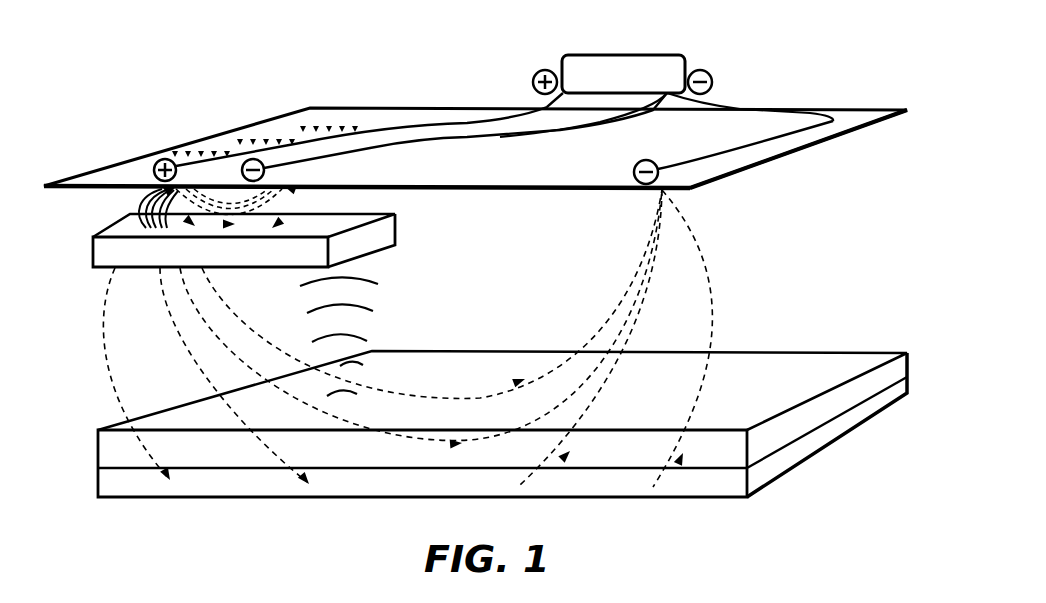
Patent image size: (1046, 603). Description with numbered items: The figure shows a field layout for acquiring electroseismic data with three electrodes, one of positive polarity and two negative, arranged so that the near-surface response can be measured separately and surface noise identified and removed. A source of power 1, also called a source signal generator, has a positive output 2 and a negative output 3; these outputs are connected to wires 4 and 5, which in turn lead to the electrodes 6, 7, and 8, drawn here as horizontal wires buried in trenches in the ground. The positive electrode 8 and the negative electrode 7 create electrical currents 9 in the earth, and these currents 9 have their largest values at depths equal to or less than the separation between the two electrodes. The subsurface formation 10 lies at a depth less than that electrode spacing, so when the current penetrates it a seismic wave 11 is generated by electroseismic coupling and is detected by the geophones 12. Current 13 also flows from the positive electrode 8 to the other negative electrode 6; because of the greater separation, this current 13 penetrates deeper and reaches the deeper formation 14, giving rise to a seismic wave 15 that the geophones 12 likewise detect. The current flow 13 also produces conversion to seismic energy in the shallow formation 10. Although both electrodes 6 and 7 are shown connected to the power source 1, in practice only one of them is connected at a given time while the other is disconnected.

The source of power 1 is at (634, 55).
The positive output 2 is at (557, 82).
The negative output 3 is at (688, 82).
The wire 4 is at (474, 121).
The wire 5 is at (586, 129).
The electrode 6 is at (773, 144).
The electrode 7 is at (370, 151).
The positive electrode 8 is at (306, 142).
The electrical currents 9 is at (258, 205).
The subsurface formation 10 is at (93, 254).
The seismic wave 11 is at (128, 203).
The geophones 12 is at (224, 130).
The current 13 is at (597, 280).
The deeper formation 14 is at (808, 455).
The seismic wave 15 is at (384, 300).